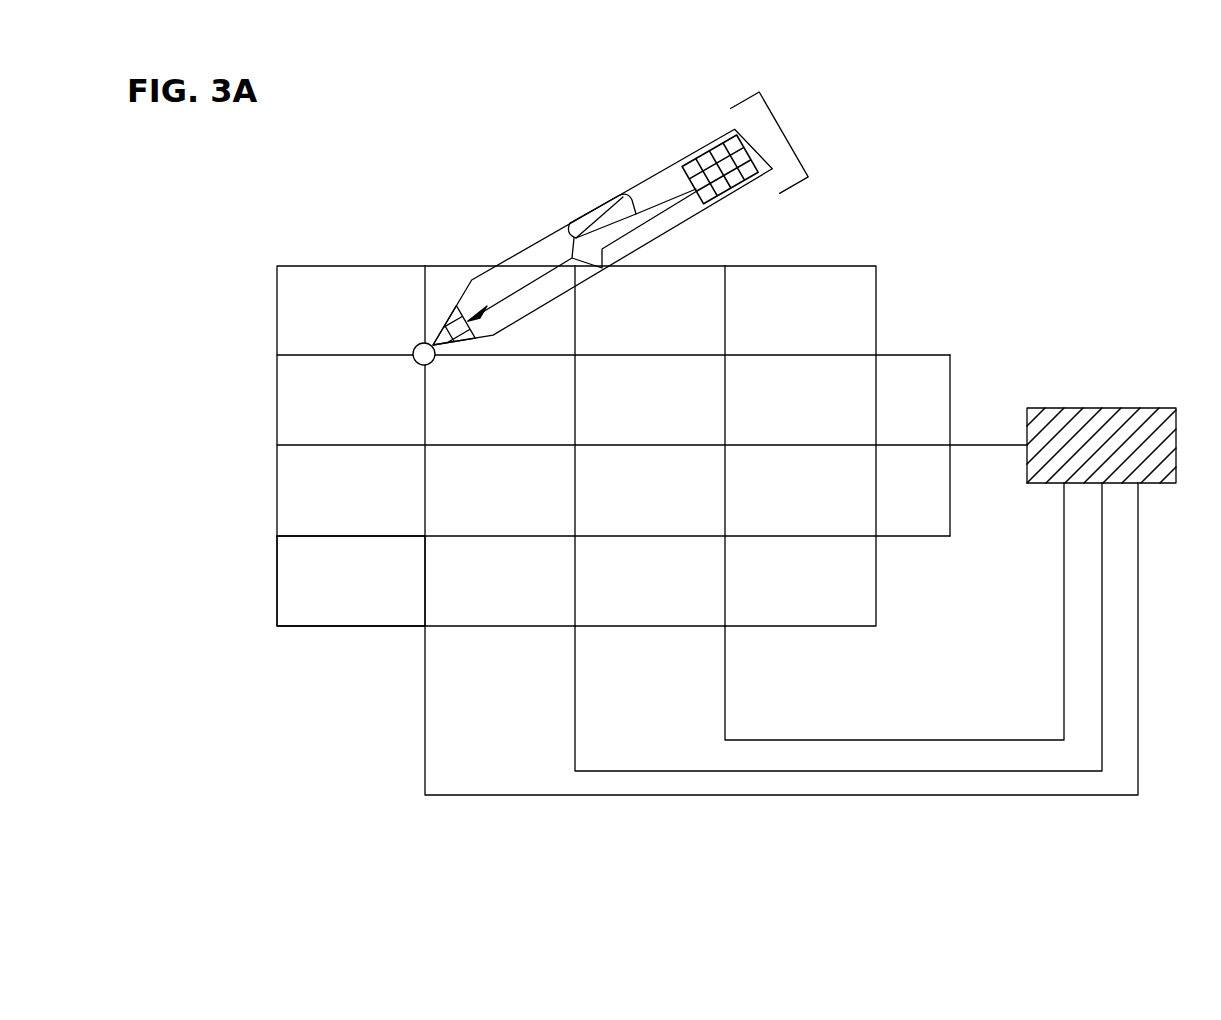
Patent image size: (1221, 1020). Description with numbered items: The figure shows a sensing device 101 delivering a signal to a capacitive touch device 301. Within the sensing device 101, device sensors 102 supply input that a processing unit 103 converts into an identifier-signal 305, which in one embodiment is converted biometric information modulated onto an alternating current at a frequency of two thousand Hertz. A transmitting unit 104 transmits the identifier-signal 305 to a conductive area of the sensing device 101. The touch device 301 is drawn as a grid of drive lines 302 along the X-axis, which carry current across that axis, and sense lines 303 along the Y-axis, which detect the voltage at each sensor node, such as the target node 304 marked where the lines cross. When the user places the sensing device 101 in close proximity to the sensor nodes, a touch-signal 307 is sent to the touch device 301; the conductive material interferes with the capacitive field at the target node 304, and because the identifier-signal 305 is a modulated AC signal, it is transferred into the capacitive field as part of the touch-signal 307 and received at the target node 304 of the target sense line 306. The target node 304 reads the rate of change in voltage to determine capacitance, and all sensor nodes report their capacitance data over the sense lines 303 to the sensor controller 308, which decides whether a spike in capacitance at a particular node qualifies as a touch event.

The sensing device 101 is at (783, 131).
The device sensors 102 is at (588, 210).
The processing unit 103 is at (710, 154).
The transmitting unit 104 is at (443, 328).
The capacitive touch device 301 is at (888, 307).
The drive lines 302 is at (277, 355).
The sense lines 303 is at (430, 628).
The target node 304 is at (412, 354).
The identifier-signal 305 is at (668, 210).
The target sense line 306 is at (413, 580).
The touch-signal 307 is at (657, 206).
The sensor controller 308 is at (1103, 408).